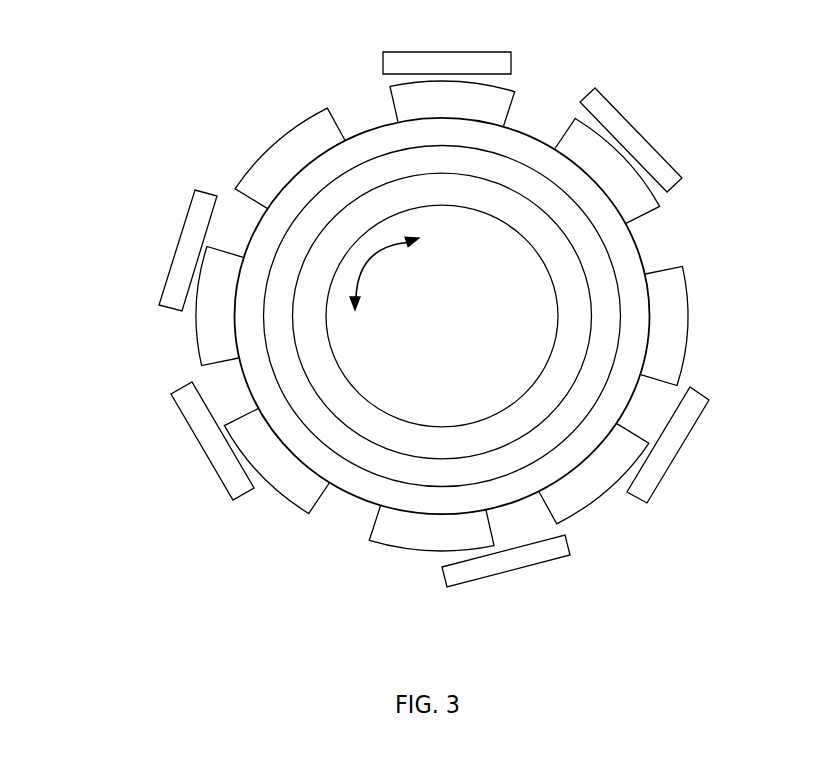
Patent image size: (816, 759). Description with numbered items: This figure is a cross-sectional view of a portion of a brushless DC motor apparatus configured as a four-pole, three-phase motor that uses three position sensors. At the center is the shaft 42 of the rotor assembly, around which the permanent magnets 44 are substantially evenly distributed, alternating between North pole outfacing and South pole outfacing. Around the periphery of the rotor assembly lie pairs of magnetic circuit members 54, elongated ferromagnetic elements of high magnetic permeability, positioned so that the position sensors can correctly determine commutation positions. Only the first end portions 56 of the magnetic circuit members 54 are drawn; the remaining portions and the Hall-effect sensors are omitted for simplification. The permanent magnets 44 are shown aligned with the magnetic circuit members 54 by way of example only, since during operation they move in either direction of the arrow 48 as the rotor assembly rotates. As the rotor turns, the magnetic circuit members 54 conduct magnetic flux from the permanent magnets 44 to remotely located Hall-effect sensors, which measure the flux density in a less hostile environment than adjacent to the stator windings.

The shaft 42 is at (457, 324).
The permanent magnets 44 is at (284, 152).
The arrow 48 is at (375, 260).
The magnetic circuit members 54 is at (102, 443).
The first end portions 56 is at (678, 127).